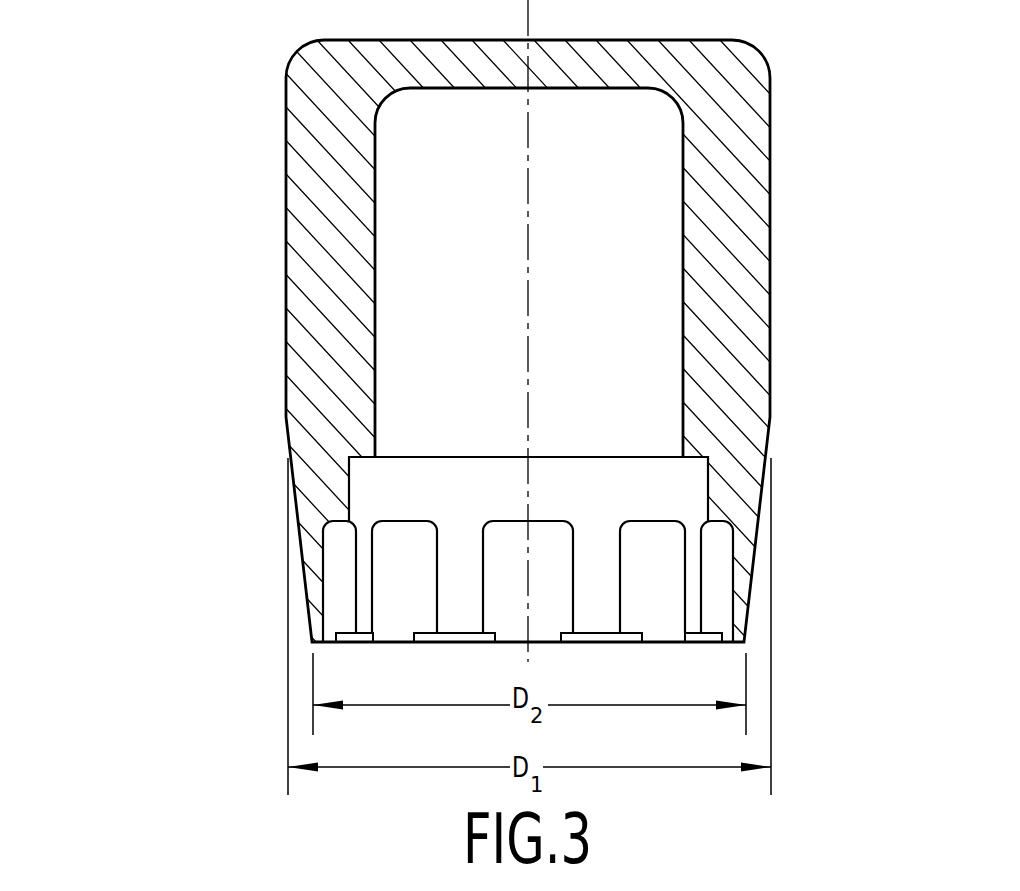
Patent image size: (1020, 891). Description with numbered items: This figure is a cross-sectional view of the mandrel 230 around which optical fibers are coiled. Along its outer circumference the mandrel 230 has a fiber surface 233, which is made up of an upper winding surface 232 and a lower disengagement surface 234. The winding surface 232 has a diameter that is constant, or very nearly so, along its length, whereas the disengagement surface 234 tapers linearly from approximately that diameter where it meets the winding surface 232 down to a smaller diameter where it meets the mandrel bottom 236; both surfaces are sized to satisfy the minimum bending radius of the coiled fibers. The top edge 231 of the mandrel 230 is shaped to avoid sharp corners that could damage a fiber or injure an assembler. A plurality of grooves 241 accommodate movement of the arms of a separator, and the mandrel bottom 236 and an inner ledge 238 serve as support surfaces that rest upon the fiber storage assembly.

The mandrel 230 is at (510, 355).
The top edge 231 is at (778, 56).
The winding surface 232 is at (266, 40).
The fiber surface 233 is at (160, 40).
The disengagement surface 234 is at (508, 560).
The mandrel bottom 236 is at (726, 655).
The inner ledge 238 is at (689, 476).
The groove 241 is at (701, 594).